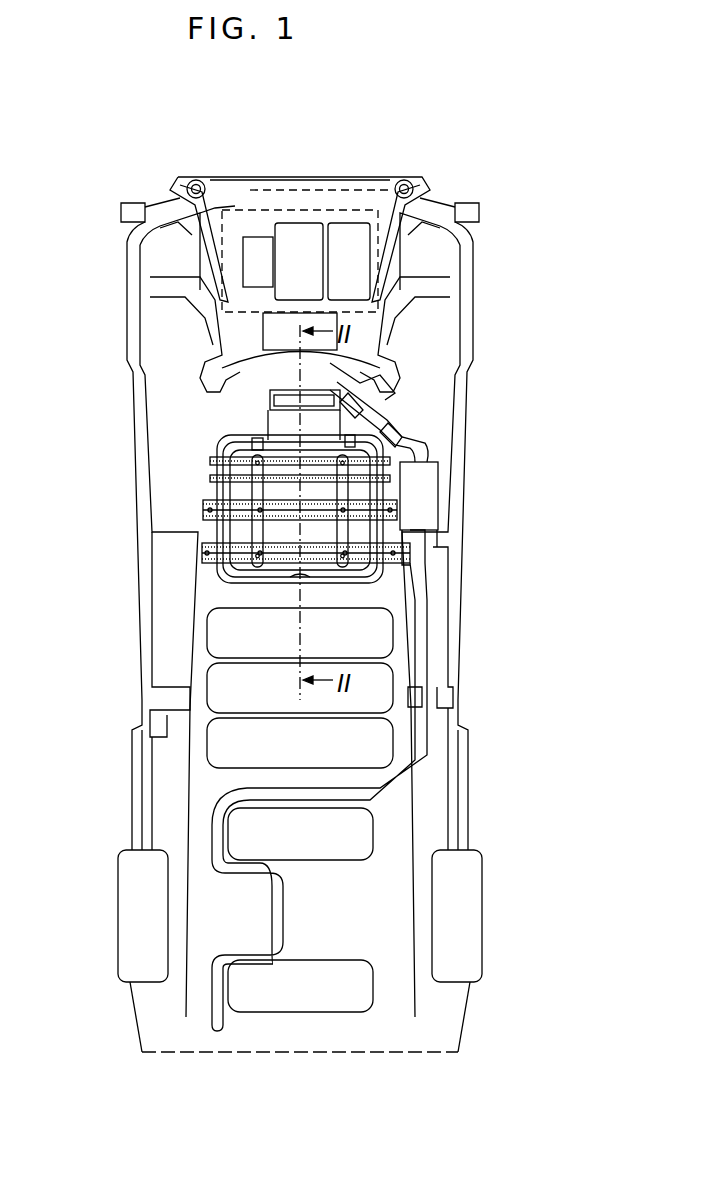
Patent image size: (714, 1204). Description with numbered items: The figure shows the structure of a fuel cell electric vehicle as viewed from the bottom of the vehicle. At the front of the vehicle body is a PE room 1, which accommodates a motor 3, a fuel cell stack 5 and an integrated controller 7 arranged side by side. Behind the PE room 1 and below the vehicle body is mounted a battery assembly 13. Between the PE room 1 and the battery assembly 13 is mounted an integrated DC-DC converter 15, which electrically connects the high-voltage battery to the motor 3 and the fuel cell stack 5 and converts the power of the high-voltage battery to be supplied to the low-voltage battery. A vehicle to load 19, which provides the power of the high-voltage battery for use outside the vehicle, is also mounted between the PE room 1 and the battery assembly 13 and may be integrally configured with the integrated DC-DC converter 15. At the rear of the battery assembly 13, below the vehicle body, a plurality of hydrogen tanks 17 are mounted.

The PE room 1 is at (245, 210).
The motor 3 is at (298, 237).
The fuel cell stack 5 is at (253, 260).
The integrated controller 7 is at (350, 240).
The battery assembly 13 is at (363, 492).
The integrated DC-DC converter 15 is at (277, 423).
The hydrogen tanks 17 is at (220, 745).
The vehicle to load 19 is at (395, 380).